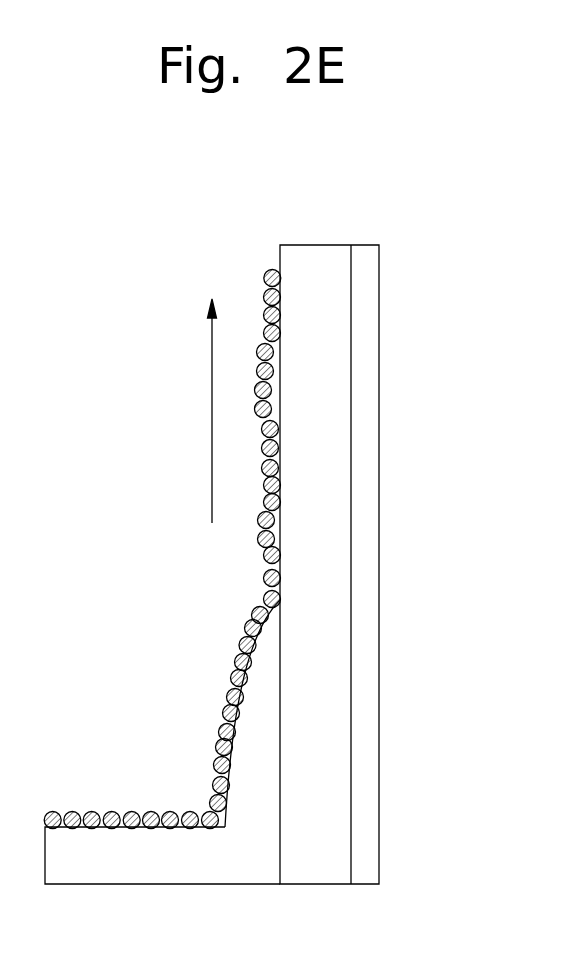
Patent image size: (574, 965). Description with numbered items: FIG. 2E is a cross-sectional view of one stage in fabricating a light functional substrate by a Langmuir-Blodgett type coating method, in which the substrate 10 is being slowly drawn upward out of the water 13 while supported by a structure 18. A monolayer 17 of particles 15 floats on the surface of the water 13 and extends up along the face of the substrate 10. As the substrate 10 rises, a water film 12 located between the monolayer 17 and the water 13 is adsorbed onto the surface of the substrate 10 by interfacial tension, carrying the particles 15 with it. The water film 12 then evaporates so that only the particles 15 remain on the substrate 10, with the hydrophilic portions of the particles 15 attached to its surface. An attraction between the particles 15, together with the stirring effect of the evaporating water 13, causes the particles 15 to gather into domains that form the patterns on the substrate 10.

The substrate 10 is at (333, 500).
The water film 12 is at (262, 631).
The water 13 is at (170, 872).
The particles 15 is at (268, 578).
The monolayer 17 is at (271, 268).
The structure 18 is at (362, 765).